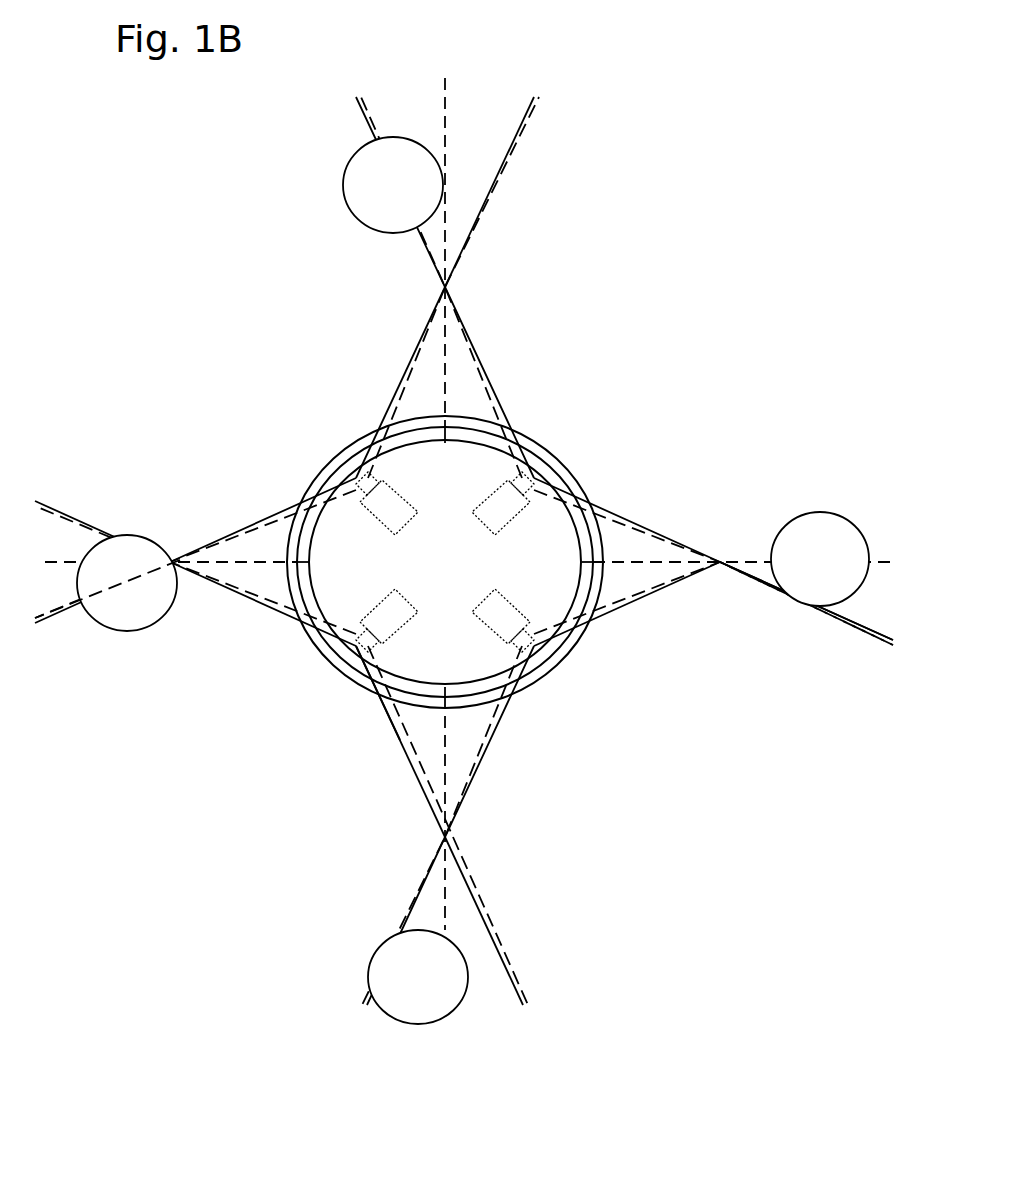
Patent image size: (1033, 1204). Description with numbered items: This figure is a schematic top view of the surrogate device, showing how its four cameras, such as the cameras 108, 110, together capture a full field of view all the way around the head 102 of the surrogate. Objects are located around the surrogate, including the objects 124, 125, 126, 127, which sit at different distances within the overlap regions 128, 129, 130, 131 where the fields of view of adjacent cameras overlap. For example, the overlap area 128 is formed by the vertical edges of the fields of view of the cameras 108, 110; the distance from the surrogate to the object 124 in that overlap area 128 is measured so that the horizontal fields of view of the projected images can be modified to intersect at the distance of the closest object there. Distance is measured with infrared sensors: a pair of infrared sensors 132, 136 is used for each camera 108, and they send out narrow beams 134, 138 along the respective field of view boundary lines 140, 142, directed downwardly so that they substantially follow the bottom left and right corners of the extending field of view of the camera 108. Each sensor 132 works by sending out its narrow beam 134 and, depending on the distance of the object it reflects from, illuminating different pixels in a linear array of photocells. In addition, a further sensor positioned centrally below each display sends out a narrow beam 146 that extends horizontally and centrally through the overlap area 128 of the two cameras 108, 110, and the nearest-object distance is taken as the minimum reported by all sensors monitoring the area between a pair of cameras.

The head 102 is at (592, 521).
The camera 108 is at (338, 641).
The camera 110 is at (542, 634).
The object 124 is at (458, 1014).
The object 125 is at (125, 625).
The object 126 is at (334, 189).
The object 127 is at (798, 578).
The overlap area 128 is at (502, 974).
The overlap region 129 is at (868, 603).
The overlap region 130 is at (73, 534).
The overlap region 131 is at (494, 126).
The infrared sensor 132 is at (386, 659).
The narrow beam 134 is at (436, 771).
The infrared sensor 136 is at (350, 636).
The narrow beam 138 is at (302, 611).
The field of view boundary line 140 is at (424, 803).
The field of view boundary line 142 is at (260, 604).
The narrow beam 146 is at (456, 889).